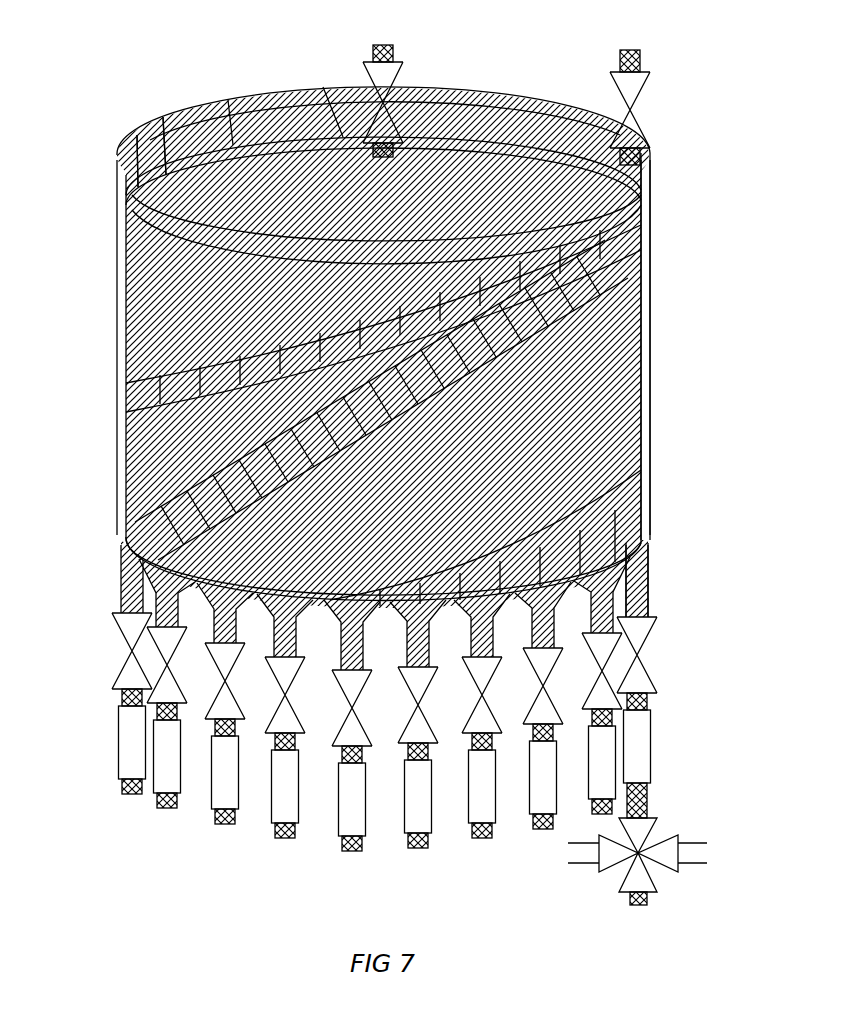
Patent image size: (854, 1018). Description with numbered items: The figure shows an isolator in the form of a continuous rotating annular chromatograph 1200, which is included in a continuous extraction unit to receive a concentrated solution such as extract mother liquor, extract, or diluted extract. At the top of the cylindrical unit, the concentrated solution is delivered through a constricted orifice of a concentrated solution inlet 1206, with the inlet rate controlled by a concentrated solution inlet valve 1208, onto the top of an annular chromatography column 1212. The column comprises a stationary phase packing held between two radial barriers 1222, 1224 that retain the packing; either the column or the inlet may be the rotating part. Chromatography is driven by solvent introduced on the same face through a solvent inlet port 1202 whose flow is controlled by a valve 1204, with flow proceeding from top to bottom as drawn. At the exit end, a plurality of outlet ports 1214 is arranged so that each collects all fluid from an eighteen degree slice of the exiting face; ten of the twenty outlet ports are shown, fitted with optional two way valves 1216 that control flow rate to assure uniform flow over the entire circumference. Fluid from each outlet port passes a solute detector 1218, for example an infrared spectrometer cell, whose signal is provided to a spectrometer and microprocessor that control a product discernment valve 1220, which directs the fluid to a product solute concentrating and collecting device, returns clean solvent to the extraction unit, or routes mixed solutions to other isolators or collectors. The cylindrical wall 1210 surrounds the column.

The continuous rotating annular chromatograph 1200 is at (536, 54).
The solvent inlet port 1202 is at (323, 87).
The valve 1204 is at (398, 68).
The concentrated solution inlet 1206 is at (650, 150).
The concentrated solution inlet valve 1208 is at (630, 93).
The cylindrical wall 1210 is at (650, 360).
The annular chromatography column 1212 is at (228, 100).
The outlet port 1214 is at (640, 580).
The two way valve 1216 is at (638, 683).
The solute detector 1218 is at (642, 768).
The product discernment valve 1220 is at (643, 838).
The radial barrier 1222 is at (163, 117).
The radial barrier 1224 is at (135, 137).